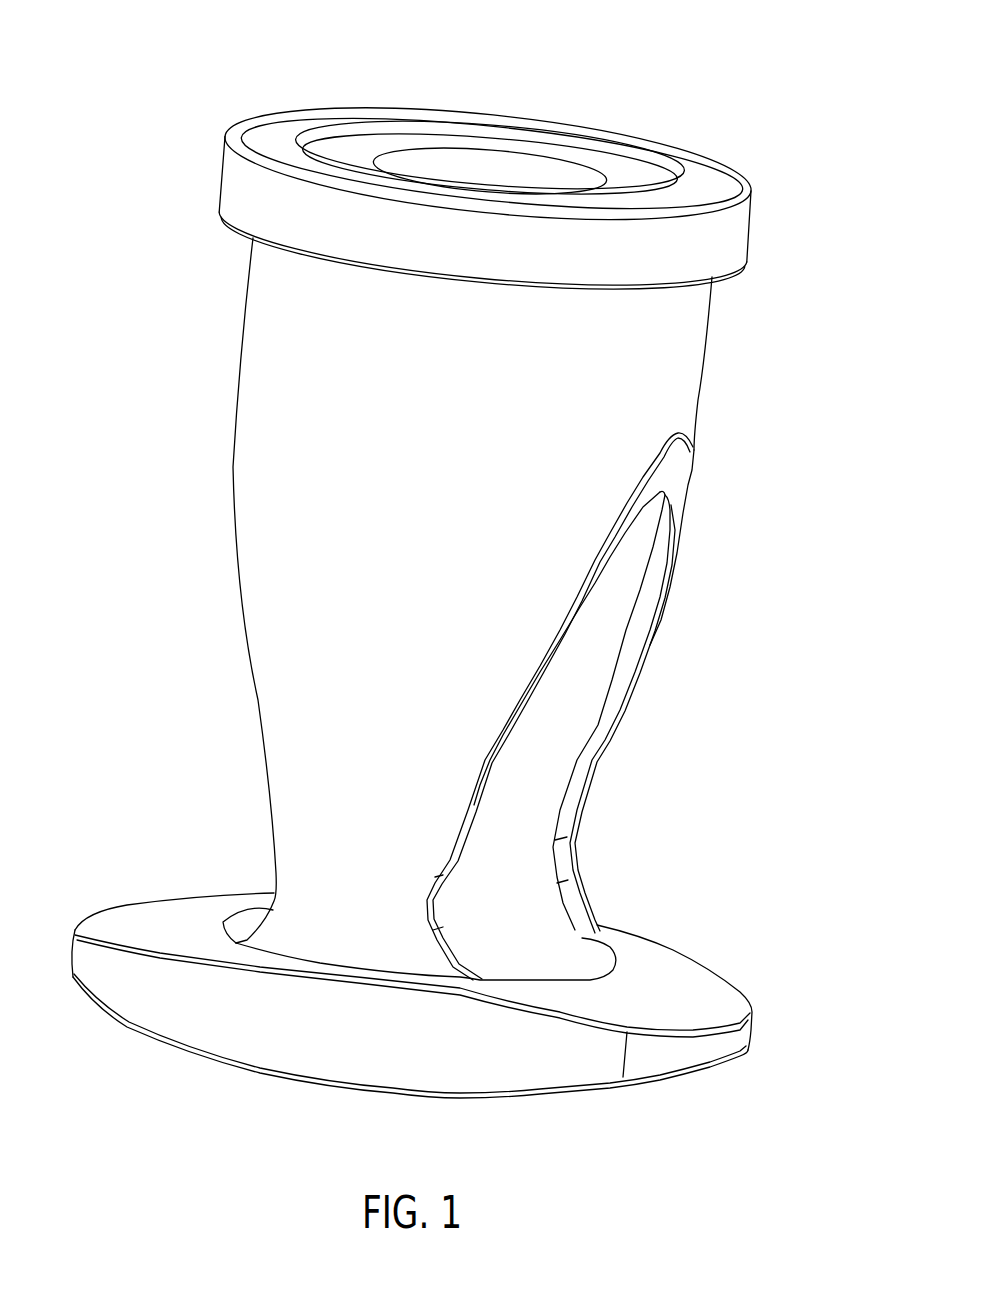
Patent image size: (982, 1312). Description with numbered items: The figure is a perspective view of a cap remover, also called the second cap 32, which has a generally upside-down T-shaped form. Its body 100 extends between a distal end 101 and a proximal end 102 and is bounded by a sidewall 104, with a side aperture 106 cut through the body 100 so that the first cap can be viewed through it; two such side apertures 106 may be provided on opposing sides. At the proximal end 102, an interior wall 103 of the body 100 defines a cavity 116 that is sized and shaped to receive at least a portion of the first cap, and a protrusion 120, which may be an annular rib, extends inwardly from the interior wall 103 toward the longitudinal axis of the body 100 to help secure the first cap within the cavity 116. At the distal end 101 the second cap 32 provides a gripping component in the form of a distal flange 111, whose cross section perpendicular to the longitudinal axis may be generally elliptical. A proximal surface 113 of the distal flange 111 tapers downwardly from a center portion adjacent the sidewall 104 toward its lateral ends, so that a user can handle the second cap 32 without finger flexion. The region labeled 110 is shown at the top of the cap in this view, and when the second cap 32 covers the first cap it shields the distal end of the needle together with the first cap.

The second cap 32 is at (166, 270).
The body 100 is at (683, 395).
The distal end 101 is at (493, 1112).
The proximal end 102 is at (756, 180).
The interior wall 103 is at (333, 131).
The sidewall 104 is at (250, 693).
The side aperture 106 is at (556, 780).
The head 110 is at (562, 77).
The distal flange 111 is at (707, 967).
The proximal surface 113 is at (148, 922).
The cavity 116 is at (545, 173).
The protrusion 120 is at (363, 157).